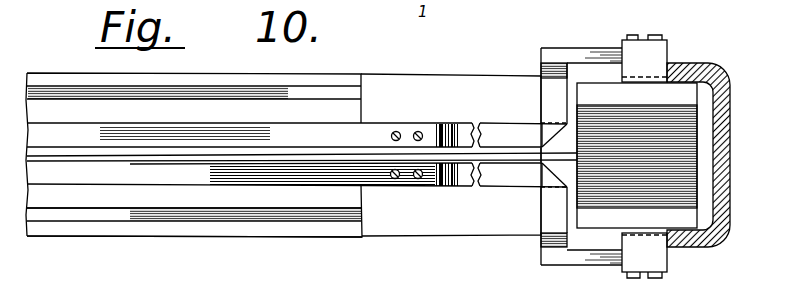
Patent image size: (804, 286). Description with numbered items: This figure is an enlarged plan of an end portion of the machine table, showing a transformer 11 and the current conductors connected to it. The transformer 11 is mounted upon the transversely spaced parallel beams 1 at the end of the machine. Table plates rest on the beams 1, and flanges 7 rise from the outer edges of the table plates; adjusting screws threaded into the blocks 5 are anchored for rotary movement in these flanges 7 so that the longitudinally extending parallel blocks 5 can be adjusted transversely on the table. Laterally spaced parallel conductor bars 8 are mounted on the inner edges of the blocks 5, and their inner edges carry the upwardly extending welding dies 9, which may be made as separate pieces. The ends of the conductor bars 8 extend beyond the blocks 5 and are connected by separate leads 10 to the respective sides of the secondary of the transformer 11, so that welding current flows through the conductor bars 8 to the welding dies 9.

The beam 1 is at (445, 92).
The block 5 is at (255, 197).
The flange 7 is at (283, 232).
The conductor bar 8 is at (393, 127).
The welding die 9 is at (322, 158).
The lead 10 is at (503, 131).
The transformer 11 is at (668, 100).